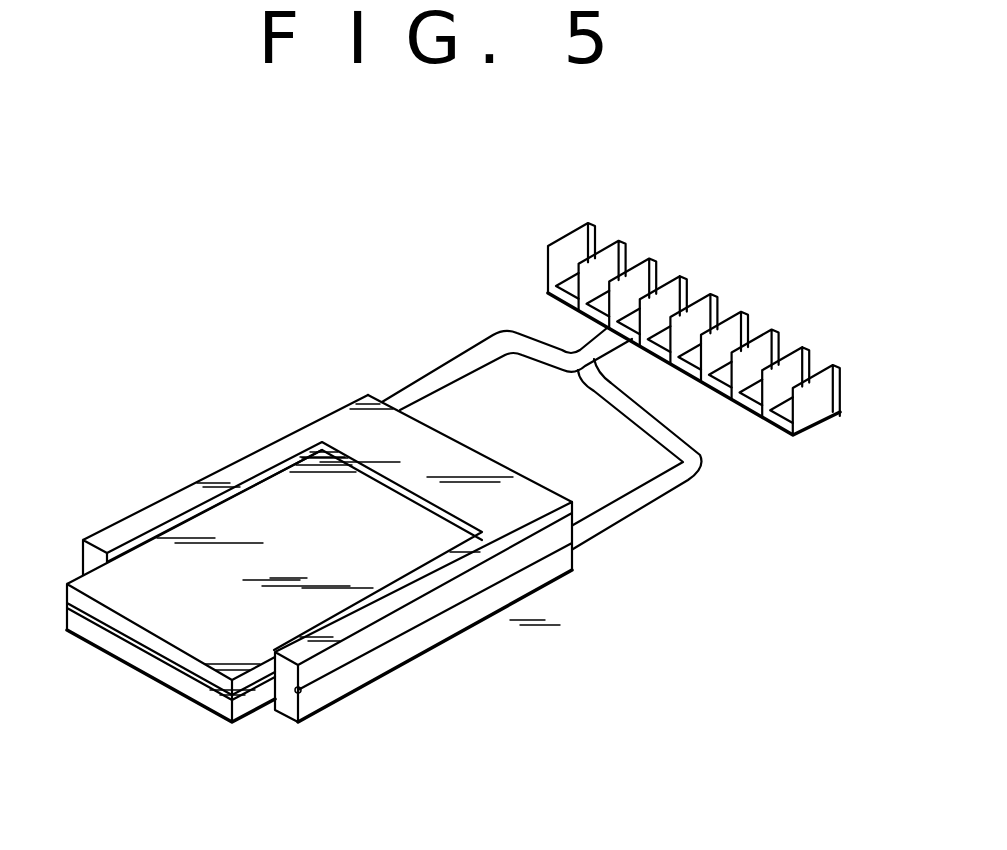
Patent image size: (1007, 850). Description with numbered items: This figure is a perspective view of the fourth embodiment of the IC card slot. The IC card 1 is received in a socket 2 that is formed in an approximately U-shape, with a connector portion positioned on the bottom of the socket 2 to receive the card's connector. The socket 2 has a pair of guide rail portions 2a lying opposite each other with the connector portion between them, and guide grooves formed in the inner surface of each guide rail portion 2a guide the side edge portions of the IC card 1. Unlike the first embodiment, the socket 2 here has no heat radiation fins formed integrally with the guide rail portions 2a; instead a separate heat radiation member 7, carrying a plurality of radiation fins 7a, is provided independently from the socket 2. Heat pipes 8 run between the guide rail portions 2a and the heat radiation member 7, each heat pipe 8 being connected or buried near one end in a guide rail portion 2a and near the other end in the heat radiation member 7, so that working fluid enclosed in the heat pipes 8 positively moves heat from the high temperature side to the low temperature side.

The IC card 1 is at (66, 592).
The socket 2 is at (417, 428).
The guide rail portion 2a is at (112, 529).
The heat radiation member 7 is at (777, 424).
The radiation fin 7a is at (753, 308).
The heat pipe 8 is at (470, 356).